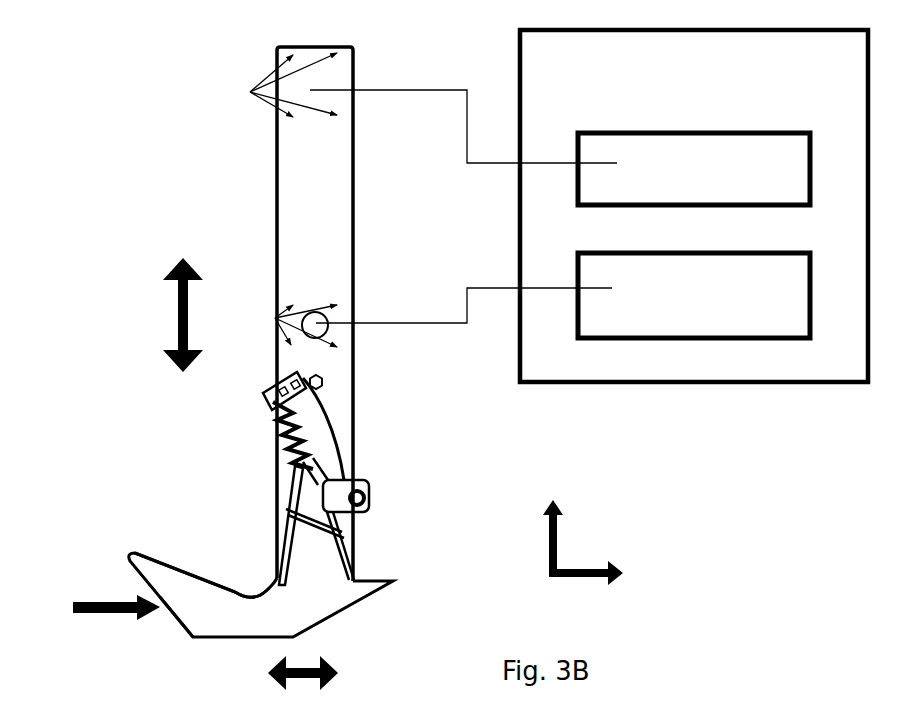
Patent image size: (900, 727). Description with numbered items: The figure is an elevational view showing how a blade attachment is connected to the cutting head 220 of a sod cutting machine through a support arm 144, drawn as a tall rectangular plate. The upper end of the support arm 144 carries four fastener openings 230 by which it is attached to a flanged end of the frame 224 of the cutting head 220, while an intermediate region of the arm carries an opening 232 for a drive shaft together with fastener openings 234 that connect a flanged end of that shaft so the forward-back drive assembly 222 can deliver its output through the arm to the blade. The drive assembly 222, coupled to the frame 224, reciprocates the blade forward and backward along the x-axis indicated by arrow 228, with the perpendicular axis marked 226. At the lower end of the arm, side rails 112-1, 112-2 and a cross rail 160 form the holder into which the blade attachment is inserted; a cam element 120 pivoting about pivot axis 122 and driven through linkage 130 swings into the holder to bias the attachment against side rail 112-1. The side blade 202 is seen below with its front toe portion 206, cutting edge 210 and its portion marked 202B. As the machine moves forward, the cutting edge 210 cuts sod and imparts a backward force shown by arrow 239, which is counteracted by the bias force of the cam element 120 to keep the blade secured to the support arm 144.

The support arm 144 is at (311, 43).
The side blade 202 is at (326, 611).
The front toe portion 206 is at (220, 630).
The cutting edge 210 is at (140, 585).
The back edge of cutting element 202B is at (190, 639).
The arrow indicating backward force 239 is at (90, 599).
The fastener openings 230 is at (250, 92).
The fastener openings 234 is at (275, 319).
The opening for a drive shaft 232 is at (329, 334).
The linkage 130 is at (275, 435).
The cam element 120 is at (346, 486).
The pivot axis 122 is at (367, 498).
The side rail 112-1 is at (284, 502).
The cross rail 160 is at (341, 535).
The side rail 112-2 is at (349, 558).
The cutting head 220 is at (505, 40).
The forward-back drive assembly 222 is at (788, 173).
The frame 224 is at (788, 318).
The Y axis direction 226 is at (559, 528).
The arrow indicating x-axis direction 228 is at (597, 581).